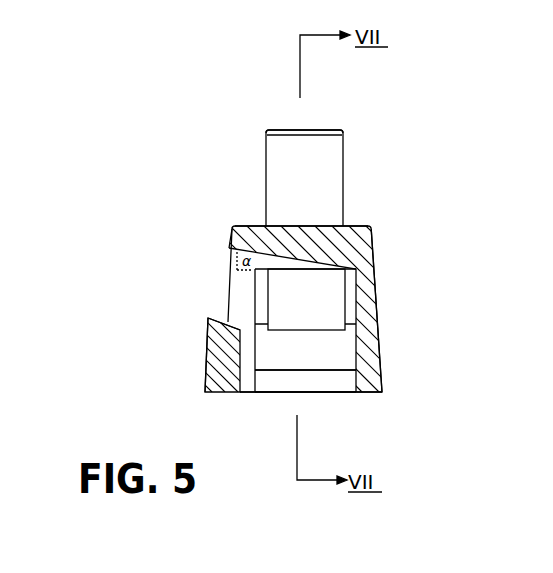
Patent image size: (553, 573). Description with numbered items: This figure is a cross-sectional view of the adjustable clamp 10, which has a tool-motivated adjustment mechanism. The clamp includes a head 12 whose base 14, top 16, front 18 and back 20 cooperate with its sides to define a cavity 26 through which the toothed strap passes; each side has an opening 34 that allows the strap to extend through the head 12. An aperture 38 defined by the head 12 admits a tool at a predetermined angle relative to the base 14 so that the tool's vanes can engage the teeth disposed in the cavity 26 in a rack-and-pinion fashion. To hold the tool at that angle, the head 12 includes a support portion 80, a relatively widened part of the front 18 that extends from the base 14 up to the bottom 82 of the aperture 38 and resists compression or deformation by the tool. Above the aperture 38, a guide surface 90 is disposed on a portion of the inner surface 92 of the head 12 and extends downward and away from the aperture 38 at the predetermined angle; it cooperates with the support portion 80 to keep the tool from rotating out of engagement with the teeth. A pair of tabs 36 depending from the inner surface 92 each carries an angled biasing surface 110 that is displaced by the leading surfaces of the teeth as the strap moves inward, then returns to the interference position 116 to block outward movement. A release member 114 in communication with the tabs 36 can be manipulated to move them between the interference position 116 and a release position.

The adjustable clamp 10 is at (177, 145).
The head 12 is at (373, 235).
The base 14 is at (323, 393).
The top 16 is at (246, 225).
The front 18 is at (207, 343).
The back 20 is at (375, 276).
The cavity 26 is at (288, 387).
The opening 34 is at (342, 352).
The tabs 36 is at (262, 291).
The aperture 38 is at (228, 247).
The support portion 80 is at (204, 380).
The bottom of the aperture 82 is at (220, 316).
The guide surface 90 is at (316, 262).
The inner surface 92 is at (358, 347).
The angled biasing surface 110 is at (315, 303).
The release member 114 is at (280, 182).
The interference position 116 is at (272, 114).